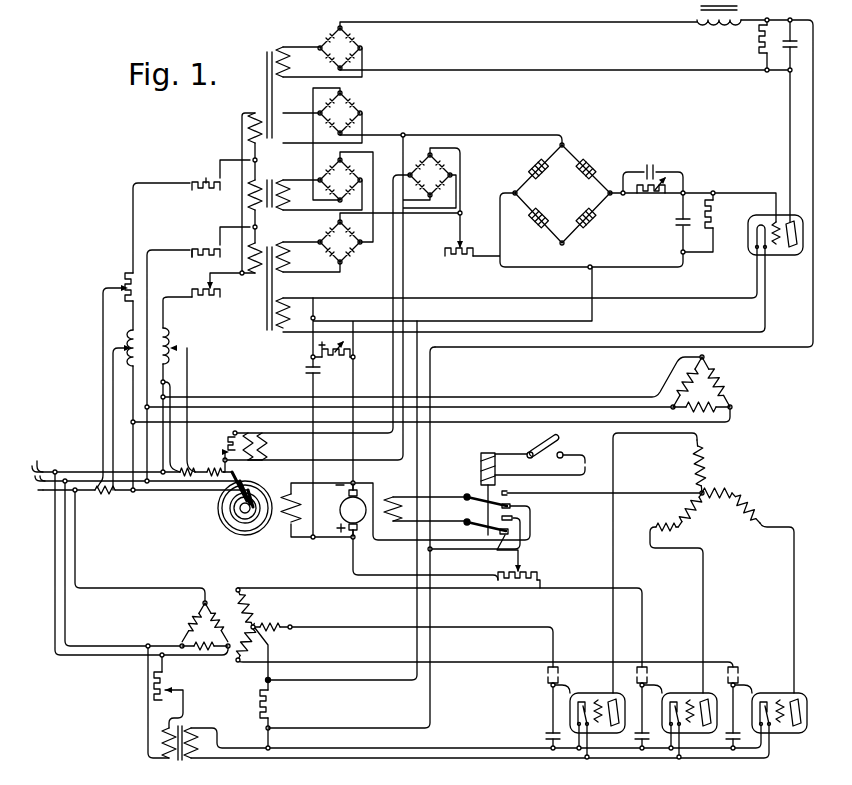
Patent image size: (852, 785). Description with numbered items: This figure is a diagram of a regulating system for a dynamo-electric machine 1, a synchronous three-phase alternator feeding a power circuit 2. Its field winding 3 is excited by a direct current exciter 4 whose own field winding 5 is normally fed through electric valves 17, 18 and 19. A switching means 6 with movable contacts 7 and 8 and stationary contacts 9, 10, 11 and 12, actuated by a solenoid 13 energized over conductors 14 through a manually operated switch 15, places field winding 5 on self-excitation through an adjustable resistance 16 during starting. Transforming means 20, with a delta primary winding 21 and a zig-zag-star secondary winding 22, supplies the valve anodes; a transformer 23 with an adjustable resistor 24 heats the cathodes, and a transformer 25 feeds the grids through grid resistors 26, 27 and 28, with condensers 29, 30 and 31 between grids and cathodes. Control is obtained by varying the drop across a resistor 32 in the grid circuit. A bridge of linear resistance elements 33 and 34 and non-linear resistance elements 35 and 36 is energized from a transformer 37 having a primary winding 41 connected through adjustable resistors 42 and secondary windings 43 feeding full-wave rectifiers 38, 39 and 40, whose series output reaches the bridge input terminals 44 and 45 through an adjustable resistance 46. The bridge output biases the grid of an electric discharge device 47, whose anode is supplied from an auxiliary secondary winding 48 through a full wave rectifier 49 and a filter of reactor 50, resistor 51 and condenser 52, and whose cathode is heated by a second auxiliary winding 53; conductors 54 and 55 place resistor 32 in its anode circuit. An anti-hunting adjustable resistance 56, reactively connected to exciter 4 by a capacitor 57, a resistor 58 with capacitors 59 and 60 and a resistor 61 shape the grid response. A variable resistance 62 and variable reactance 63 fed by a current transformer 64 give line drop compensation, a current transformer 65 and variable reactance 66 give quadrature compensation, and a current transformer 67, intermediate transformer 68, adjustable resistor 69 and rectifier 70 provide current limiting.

The dynamo-electric machine 1 is at (220, 525).
The power circuit 2 is at (43, 471).
The field winding 3 is at (282, 524).
The exciter 4 is at (342, 514).
The field winding 5 is at (392, 496).
The switching means 6 is at (463, 488).
The movable contact 7 is at (475, 501).
The movable contact 8 is at (475, 526).
The stationary contact 9 is at (505, 491).
The stationary contact 10 is at (512, 506).
The stationary contact 11 is at (515, 519).
The stationary contact 12 is at (505, 541).
The solenoid 13 is at (482, 453).
The conductors 14 is at (586, 462).
The manually operated switch 15 is at (541, 444).
The adjustable resistance 16 is at (530, 571).
The electric valve 17 is at (605, 693).
The electric valve 18 is at (698, 693).
The electric valve 19 is at (788, 693).
The transforming means 20 is at (694, 485).
The primary winding 21 is at (722, 374).
The secondary winding 22 is at (735, 490).
The transformer 23 is at (188, 727).
The adjustable resistor 24 is at (167, 678).
The transformer 25 is at (205, 617).
The grid resistor 26 is at (547, 677).
The grid resistor 27 is at (648, 674).
The grid resistor 28 is at (739, 670).
The condenser 29 is at (546, 735).
The condenser 30 is at (635, 737).
The condenser 31 is at (726, 737).
The resistor 32 is at (274, 701).
The resistance element 33 is at (532, 225).
The resistance element 34 is at (591, 164).
The resistance element 35 is at (530, 165).
The resistance element 36 is at (590, 225).
The transformer 37 is at (261, 106).
The rectifier 38 is at (340, 113).
The rectifier 39 is at (340, 180).
The rectifier 40 is at (340, 242).
The primary winding 41 is at (249, 129).
The adjustable resistors 42 is at (199, 247).
The secondary windings 43 is at (283, 178).
The input terminal 44 is at (564, 143).
The input terminal 45 is at (564, 245).
The adjustable resistance 46 is at (458, 257).
The electric discharge device 47 is at (775, 256).
The auxiliary secondary winding 48 is at (282, 47).
The full wave rectifier 49 is at (340, 48).
The reactor 50 is at (715, 24).
The resistor 51 is at (758, 45).
The condenser 52 is at (797, 46).
The second auxiliary winding 53 is at (284, 331).
The conductor 54 is at (418, 359).
The conductor 55 is at (431, 377).
The adjustable resistance 56 is at (352, 348).
The capacitor 57 is at (306, 373).
The resistor 58 is at (652, 197).
The capacitor 59 is at (678, 227).
The capacitor 60 is at (655, 166).
The resistor 61 is at (720, 213).
The variable resistance 62 is at (124, 285).
The variable reactance 63 is at (127, 336).
The current transformer 64 is at (103, 496).
The current transformer 65 is at (186, 478).
The variable reactance 66 is at (172, 332).
The current transformer 67 is at (213, 478).
The intermediate transformer 68 is at (255, 458).
The adjustable resistor 69 is at (232, 443).
The rectifier 70 is at (430, 175).